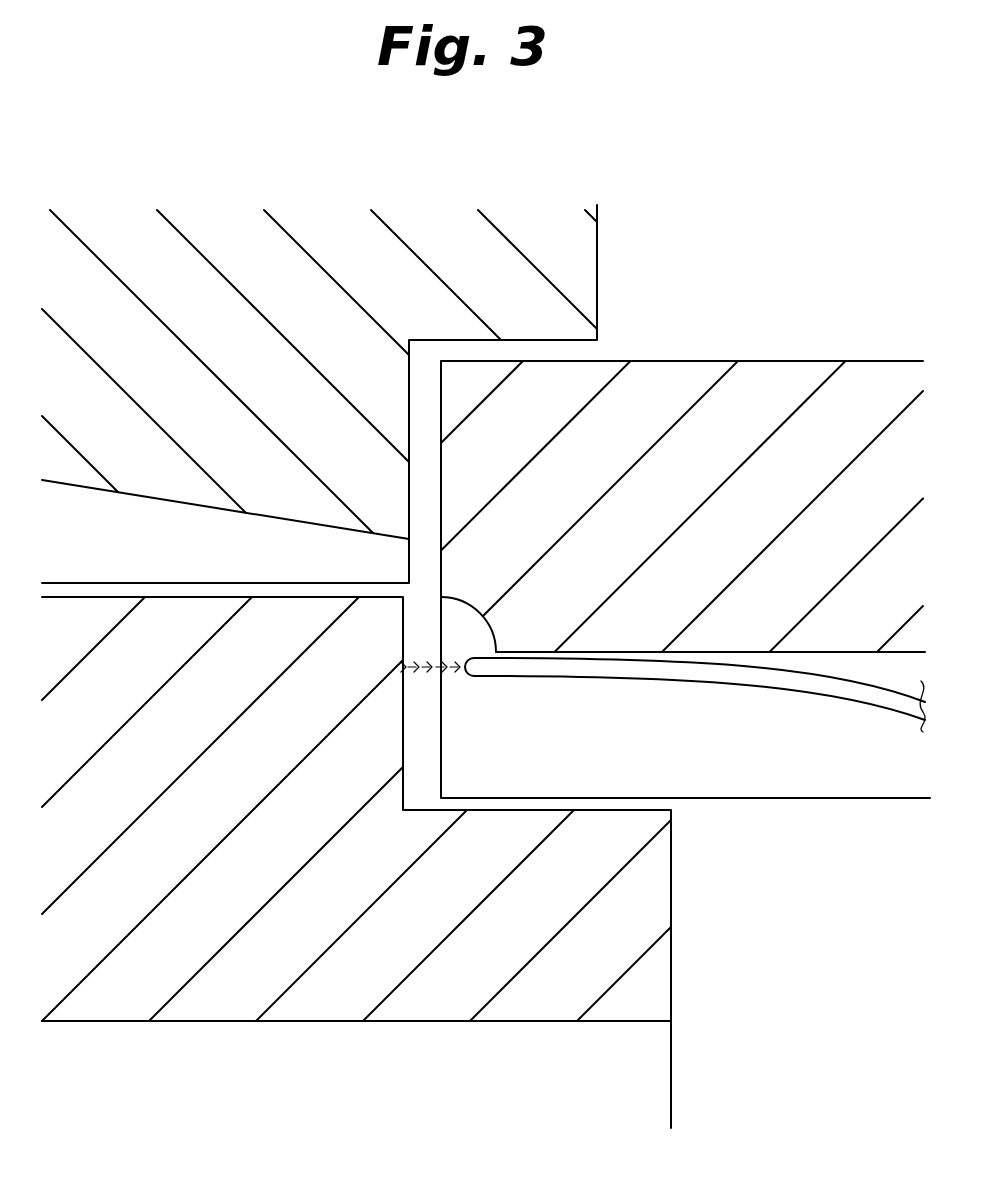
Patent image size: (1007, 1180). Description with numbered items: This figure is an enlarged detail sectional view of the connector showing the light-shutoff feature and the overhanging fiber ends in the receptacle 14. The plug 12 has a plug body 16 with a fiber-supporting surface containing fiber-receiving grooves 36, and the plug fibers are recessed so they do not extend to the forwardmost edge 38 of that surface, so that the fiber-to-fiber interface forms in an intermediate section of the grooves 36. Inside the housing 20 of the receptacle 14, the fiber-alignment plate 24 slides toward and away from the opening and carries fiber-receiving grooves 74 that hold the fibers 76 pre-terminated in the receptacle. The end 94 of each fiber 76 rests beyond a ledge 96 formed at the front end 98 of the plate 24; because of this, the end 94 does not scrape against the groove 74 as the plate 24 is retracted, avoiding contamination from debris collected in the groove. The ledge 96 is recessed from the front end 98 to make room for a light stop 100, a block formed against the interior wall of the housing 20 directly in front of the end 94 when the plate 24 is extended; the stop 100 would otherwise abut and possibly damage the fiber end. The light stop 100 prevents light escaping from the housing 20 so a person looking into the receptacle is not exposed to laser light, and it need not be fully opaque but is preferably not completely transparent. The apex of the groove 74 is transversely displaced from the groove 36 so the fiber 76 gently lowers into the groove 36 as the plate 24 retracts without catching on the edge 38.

The plug 12 is at (597, 287).
The receptacle 14 is at (536, 1020).
The plug body 16 is at (137, 460).
The housing 20 is at (128, 970).
The fiber-alignment plate 24 is at (763, 360).
The fiber-receiving grooves 36 is at (62, 486).
The forwardmost edge 38 is at (410, 485).
The fiber-receiving grooves 74 is at (857, 652).
The fibers 76 is at (652, 682).
The fiber end 94 is at (468, 677).
The ledge 96 is at (497, 643).
The front end 98 is at (437, 584).
The light stop 100 is at (404, 708).